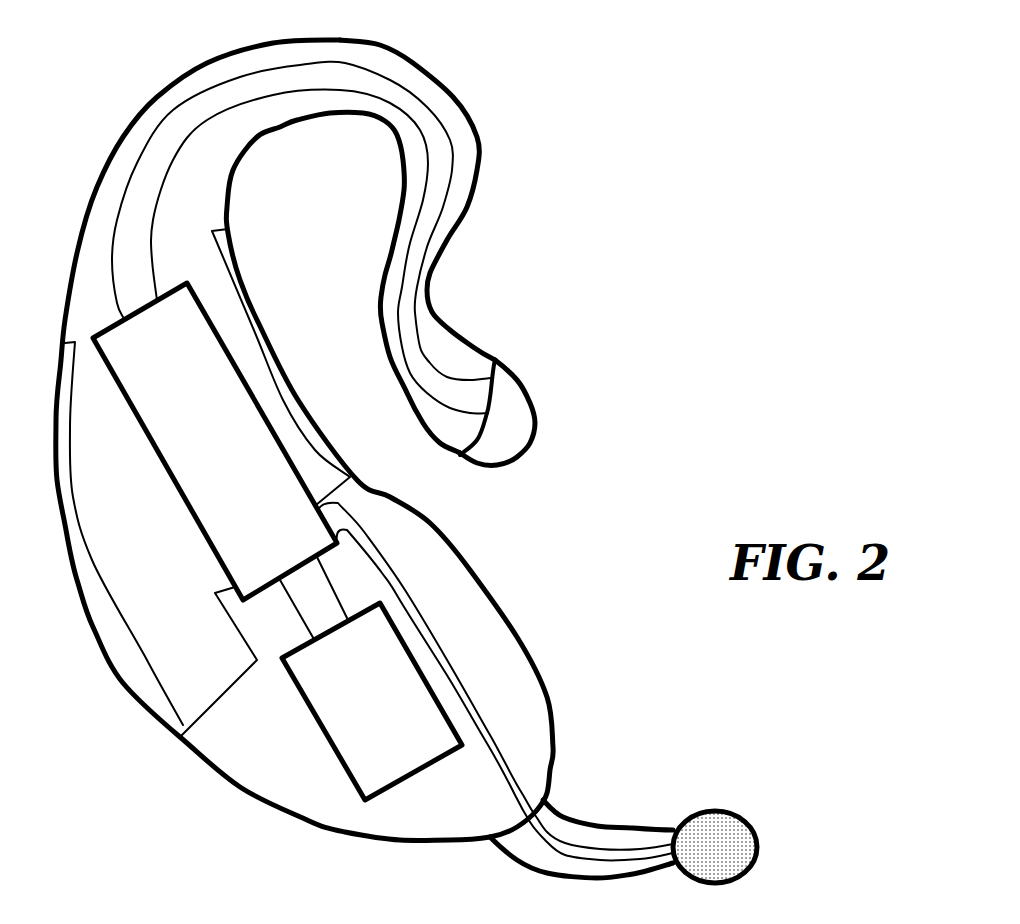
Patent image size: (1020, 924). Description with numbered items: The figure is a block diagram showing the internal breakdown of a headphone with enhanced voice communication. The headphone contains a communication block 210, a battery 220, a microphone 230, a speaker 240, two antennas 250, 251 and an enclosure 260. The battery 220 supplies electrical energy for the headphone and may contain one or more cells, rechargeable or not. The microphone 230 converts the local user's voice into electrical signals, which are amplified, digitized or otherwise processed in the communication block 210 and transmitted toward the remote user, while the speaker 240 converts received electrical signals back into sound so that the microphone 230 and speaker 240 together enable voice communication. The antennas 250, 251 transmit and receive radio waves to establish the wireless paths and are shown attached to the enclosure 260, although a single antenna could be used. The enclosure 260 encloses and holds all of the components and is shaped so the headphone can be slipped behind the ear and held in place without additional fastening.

The communication block 210 is at (215, 441).
The battery 220 is at (372, 701).
The microphone 230 is at (727, 812).
The speaker 240 is at (527, 387).
The antenna 250 is at (135, 660).
The antenna 251 is at (263, 327).
The enclosure 260 is at (470, 570).